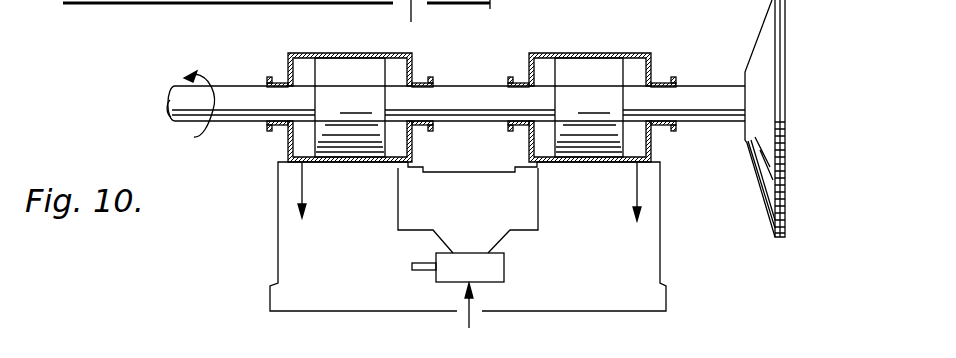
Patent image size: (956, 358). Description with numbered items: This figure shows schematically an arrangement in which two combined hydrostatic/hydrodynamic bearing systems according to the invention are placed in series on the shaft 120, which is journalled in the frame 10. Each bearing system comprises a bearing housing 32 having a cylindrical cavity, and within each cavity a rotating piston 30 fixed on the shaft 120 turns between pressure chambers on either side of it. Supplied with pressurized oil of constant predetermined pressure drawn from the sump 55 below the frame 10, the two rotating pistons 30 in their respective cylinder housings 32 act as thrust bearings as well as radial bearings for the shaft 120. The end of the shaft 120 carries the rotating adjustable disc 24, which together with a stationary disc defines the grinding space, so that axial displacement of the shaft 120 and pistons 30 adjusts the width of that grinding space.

The frame 10 is at (278, 222).
The rotating adjustable disc 24 is at (785, 45).
The piston 30 is at (326, 72).
The bearing housing 32 is at (289, 62).
The sump 55 is at (497, 272).
The shaft 120 is at (708, 95).